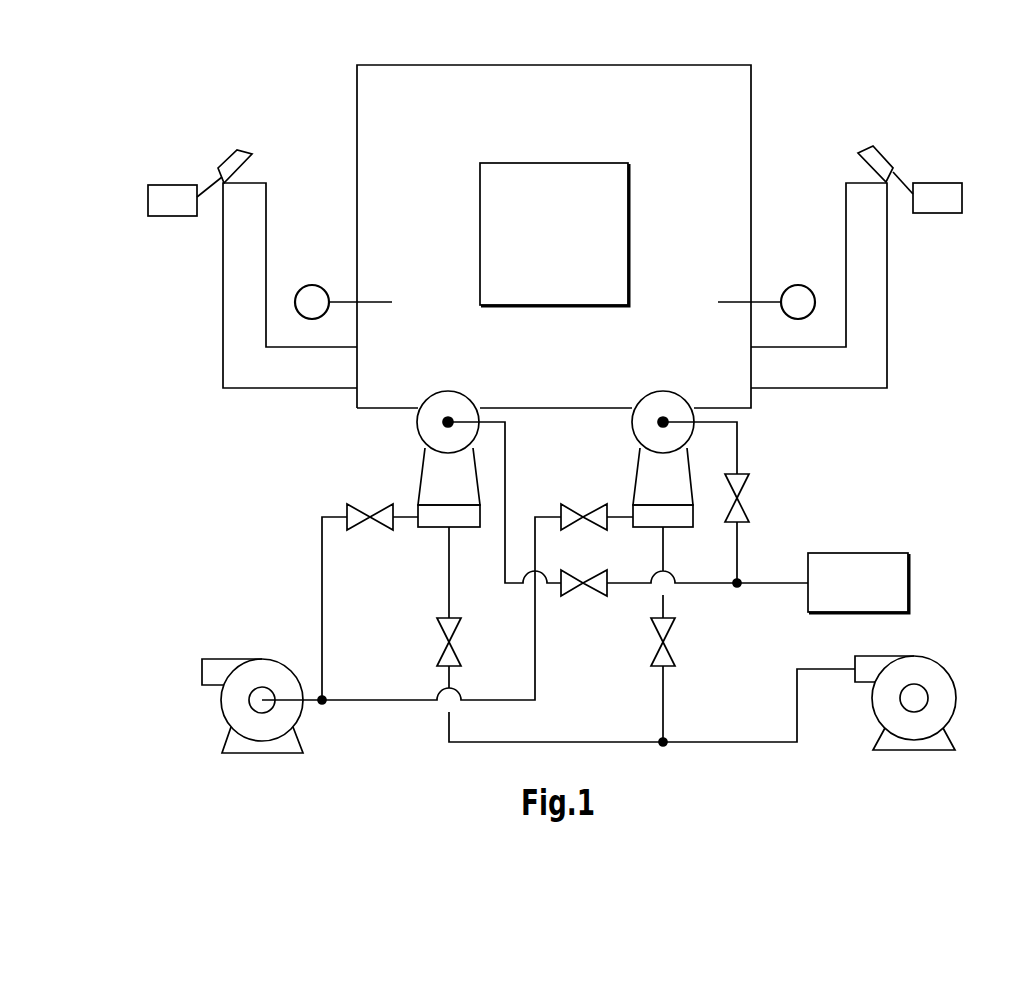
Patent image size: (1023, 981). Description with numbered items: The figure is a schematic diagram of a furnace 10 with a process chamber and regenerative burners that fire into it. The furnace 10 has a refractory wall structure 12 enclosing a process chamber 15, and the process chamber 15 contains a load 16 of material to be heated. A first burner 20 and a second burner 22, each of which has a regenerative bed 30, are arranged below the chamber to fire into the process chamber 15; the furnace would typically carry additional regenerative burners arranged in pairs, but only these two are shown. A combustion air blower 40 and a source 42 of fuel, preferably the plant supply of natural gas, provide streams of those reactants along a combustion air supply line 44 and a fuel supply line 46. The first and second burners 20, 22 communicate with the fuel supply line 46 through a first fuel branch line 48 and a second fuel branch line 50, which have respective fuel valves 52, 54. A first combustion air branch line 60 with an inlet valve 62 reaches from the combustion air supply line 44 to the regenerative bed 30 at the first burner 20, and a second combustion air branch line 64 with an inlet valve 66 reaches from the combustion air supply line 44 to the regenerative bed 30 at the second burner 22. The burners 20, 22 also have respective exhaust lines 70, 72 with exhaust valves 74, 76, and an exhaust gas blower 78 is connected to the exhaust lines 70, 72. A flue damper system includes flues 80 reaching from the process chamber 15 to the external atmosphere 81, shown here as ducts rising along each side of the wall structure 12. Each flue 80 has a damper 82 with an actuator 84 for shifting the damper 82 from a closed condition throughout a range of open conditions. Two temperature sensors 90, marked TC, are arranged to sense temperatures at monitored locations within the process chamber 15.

The furnace 10 is at (262, 71).
The refractory wall structure 12 is at (357, 120).
The process chamber 15 is at (523, 125).
The load 16 is at (612, 163).
The first burner 20 is at (422, 465).
The second burner 22 is at (690, 467).
The regenerative bed 30 is at (437, 515).
The combustion air blower 40 is at (938, 660).
The source of fuel 42 is at (872, 553).
The combustion air supply line 44 is at (718, 745).
The fuel supply line 46 is at (772, 585).
The first fuel branch line 48 is at (503, 533).
The second fuel branch line 50 is at (740, 553).
The fuel valve 52 is at (592, 596).
The fuel valve 54 is at (746, 490).
The first combustion air branch line 60 is at (523, 743).
The inlet valve 62 is at (437, 630).
The second combustion air branch line 64 is at (663, 695).
The inlet valve 66 is at (677, 652).
The exhaust line 70 is at (321, 562).
The exhaust line 72 is at (380, 703).
The exhaust valve 74 is at (378, 510).
The exhaust valve 76 is at (592, 505).
The exhaust gas blower 78 is at (262, 659).
The flue 80 is at (223, 293).
The external atmosphere 81 is at (851, 68).
The damper 82 is at (226, 157).
The actuator 84 is at (180, 185).
The temperature sensor 90 is at (311, 285).